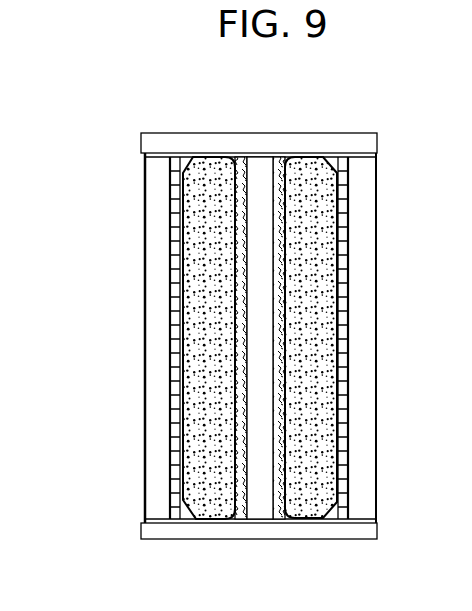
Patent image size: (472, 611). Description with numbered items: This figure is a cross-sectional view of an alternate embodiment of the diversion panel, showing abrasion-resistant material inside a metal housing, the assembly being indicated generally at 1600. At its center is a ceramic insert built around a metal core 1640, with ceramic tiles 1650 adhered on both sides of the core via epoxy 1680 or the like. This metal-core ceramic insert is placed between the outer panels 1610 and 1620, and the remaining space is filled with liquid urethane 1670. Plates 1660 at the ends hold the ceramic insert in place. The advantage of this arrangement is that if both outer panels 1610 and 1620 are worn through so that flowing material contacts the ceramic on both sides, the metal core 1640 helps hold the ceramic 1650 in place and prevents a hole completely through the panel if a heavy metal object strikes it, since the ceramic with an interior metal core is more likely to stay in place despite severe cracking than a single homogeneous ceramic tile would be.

The electrochemical cell assembly 1600 is at (97, 252).
The outer panel 1610 is at (376, 315).
The outer panel 1620 is at (138, 440).
The metal core 1640 is at (243, 153).
The ceramic tiles 1650 is at (187, 158).
The plates 1660 is at (282, 140).
The liquid urethane 1670 is at (173, 277).
The epoxy 1680 is at (272, 325).